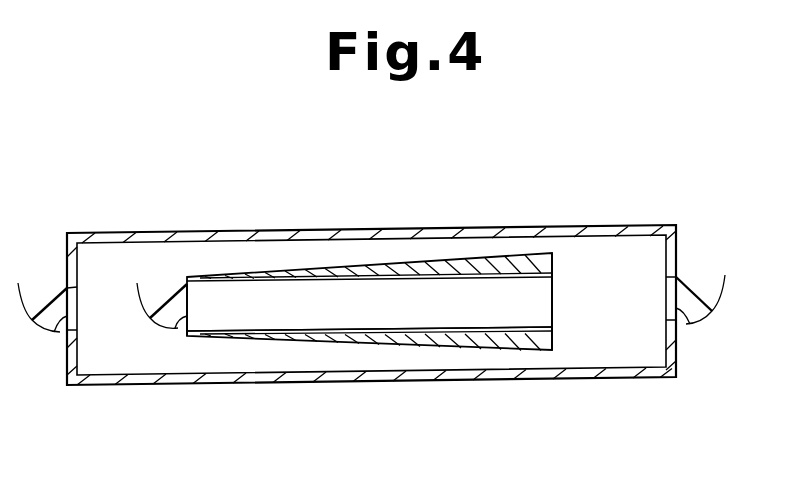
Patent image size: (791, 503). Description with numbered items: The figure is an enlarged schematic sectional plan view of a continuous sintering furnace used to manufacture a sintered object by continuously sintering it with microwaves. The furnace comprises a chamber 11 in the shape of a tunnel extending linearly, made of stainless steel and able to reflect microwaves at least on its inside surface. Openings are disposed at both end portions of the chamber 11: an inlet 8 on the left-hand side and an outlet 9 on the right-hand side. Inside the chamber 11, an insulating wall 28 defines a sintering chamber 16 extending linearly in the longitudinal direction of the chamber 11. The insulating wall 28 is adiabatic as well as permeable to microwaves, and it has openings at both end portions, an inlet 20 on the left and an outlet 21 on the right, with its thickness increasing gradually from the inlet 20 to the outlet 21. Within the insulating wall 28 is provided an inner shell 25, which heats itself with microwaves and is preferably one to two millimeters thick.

The inlet 8 is at (54, 332).
The outlet 9 is at (690, 324).
The chamber 11 is at (518, 380).
The sintering chamber 16 is at (403, 284).
The inlet 20 is at (175, 328).
The outlet 21 is at (553, 302).
The inner shell 25 is at (393, 328).
The insulating wall 28 is at (485, 260).